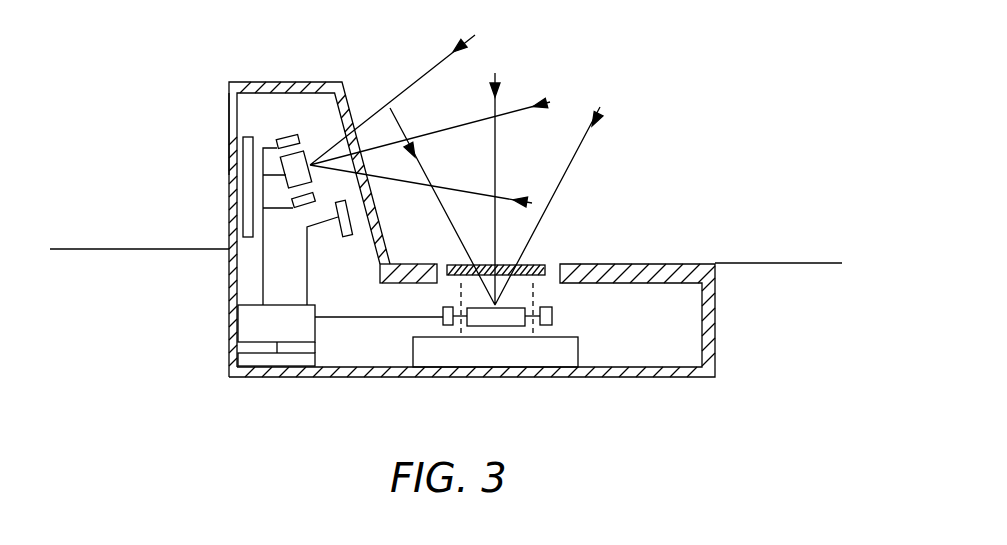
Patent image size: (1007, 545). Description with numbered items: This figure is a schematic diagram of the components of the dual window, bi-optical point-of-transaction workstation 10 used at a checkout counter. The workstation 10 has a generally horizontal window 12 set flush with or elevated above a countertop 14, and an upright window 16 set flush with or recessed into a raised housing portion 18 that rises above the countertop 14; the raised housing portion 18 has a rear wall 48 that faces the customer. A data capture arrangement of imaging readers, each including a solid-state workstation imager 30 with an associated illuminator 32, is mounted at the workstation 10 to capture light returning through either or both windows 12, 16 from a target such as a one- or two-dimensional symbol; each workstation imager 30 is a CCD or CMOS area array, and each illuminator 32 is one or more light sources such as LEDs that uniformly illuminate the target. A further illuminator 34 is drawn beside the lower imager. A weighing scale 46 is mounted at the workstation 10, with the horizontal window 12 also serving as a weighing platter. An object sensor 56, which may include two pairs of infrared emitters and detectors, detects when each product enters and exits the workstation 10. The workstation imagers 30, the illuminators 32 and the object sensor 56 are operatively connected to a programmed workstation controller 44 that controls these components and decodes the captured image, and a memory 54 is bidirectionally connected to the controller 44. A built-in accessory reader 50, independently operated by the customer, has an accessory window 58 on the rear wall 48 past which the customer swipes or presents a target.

The point-of-transaction workstation 10 is at (605, 212).
The horizontal window 12 is at (538, 264).
The countertop 14 is at (81, 249).
The upright window 16 is at (365, 183).
The raised housing portion 18 is at (294, 87).
The workstation imager 30 is at (511, 395).
The illuminator 32 is at (586, 395).
The illuminator 34 is at (447, 326).
The workstation controller 44 is at (248, 322).
The weighing scale 46 is at (413, 348).
The rear wall 48 is at (228, 126).
The accessory reader 50 is at (250, 135).
The memory 54 is at (253, 362).
The object sensor 56 is at (349, 238).
The accessory window 58 is at (228, 155).